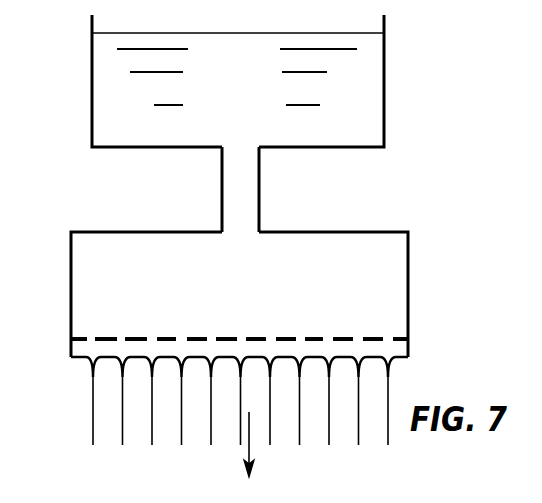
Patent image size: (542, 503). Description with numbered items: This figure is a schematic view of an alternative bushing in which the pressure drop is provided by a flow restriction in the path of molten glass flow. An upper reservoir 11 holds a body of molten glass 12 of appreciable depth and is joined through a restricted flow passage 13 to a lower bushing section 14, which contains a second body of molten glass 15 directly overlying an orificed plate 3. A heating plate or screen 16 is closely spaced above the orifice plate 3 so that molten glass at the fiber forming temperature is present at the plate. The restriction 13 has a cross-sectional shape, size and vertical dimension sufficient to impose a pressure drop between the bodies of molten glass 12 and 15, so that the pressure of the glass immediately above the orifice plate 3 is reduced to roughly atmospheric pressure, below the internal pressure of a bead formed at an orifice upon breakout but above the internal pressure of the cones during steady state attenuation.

The upper reservoir 11 is at (384, 70).
The body of molten glass 12 is at (246, 91).
The restricted flow passage 13 is at (259, 168).
The lower bushing section 14 is at (408, 253).
The body of molten glass 15 is at (248, 295).
The heating plate or screen 16 is at (350, 339).
The orificed plate 3 is at (78, 360).